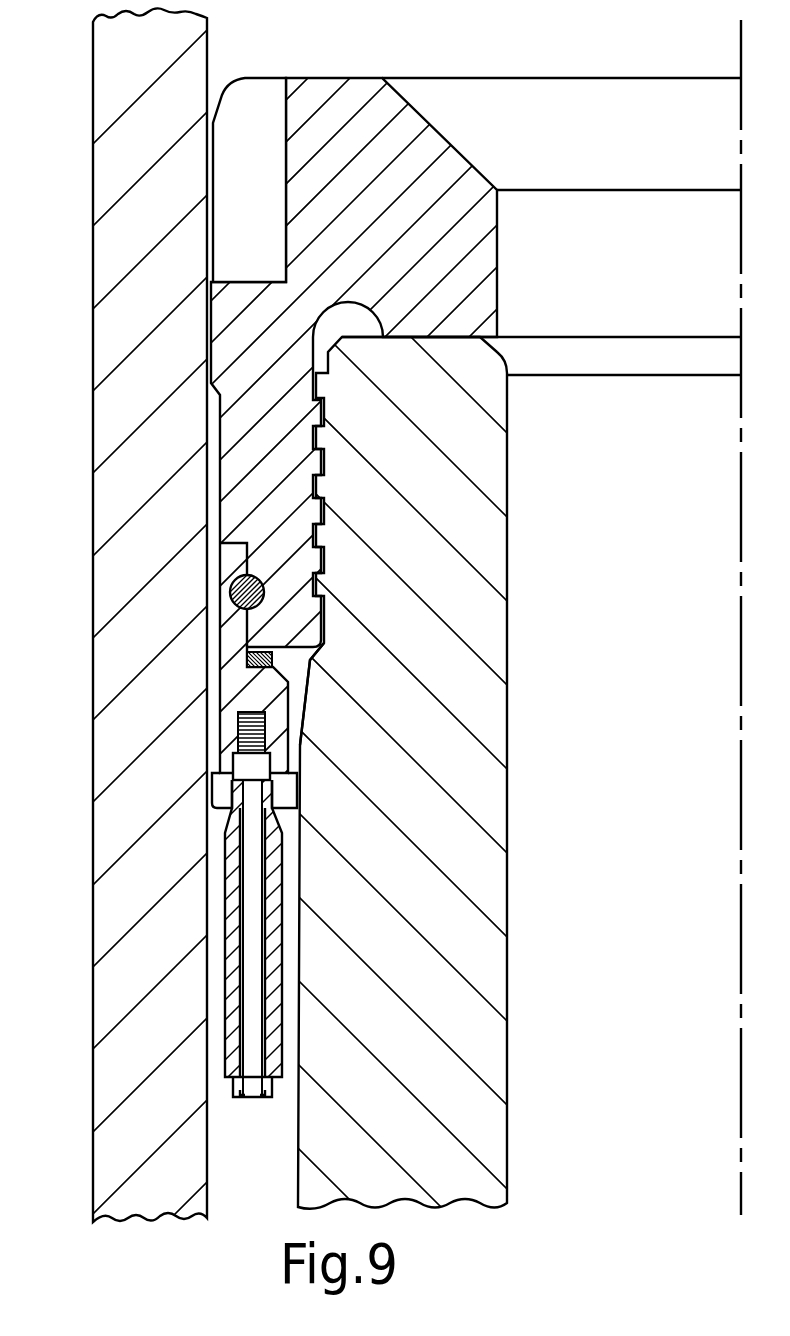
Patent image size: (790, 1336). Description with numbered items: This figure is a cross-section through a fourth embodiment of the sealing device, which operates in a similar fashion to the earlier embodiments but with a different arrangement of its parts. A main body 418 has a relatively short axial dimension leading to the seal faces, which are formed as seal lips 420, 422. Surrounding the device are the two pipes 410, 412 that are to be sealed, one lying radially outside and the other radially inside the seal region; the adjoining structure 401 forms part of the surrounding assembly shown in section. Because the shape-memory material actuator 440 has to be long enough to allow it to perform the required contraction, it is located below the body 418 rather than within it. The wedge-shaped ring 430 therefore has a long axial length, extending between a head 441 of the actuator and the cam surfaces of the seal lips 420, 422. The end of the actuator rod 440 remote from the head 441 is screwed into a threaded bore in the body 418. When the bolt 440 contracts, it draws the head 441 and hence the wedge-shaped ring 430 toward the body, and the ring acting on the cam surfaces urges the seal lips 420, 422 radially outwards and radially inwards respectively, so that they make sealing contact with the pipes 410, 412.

The housing body 401 is at (482, 262).
The pipe 410 is at (113, 710).
The pipe 412 is at (485, 706).
The main body 418 is at (257, 700).
The seal lip 420 is at (212, 797).
The seal lip 422 is at (290, 797).
The wedge-shaped ring 430 is at (272, 1030).
The shape-memory material actuator 440 is at (250, 926).
The head 441 is at (250, 1098).